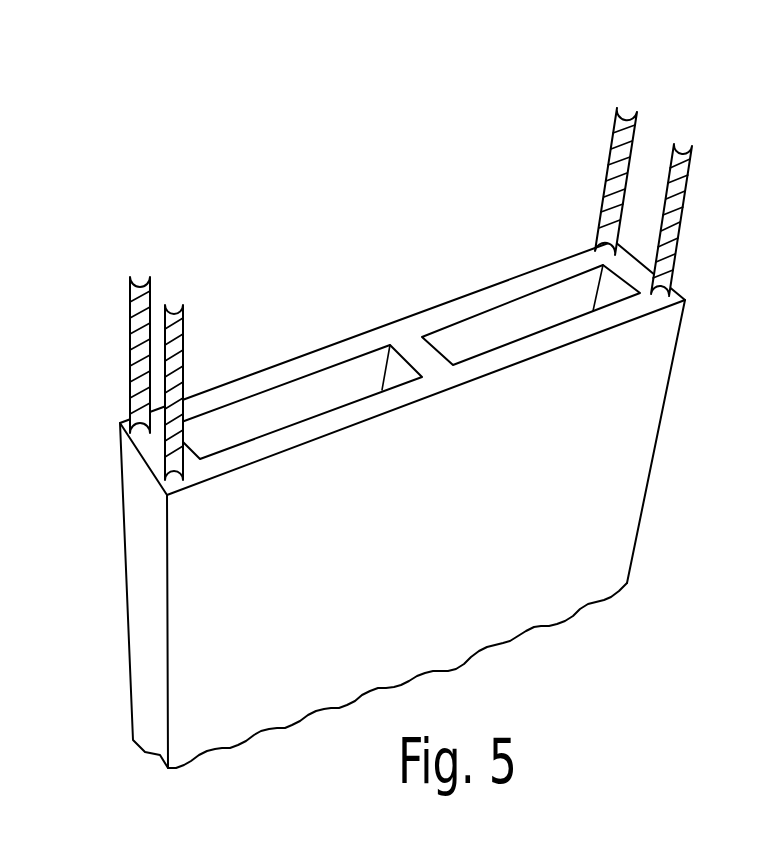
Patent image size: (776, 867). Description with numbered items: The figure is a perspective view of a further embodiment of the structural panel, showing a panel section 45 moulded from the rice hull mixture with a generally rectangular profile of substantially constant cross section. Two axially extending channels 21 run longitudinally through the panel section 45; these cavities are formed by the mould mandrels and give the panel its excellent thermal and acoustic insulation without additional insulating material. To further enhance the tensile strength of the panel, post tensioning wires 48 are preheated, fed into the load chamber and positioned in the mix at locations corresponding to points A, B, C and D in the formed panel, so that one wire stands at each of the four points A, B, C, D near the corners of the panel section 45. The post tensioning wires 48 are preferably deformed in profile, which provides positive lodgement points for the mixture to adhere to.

The panel section 45 is at (159, 193).
The post tensioning wires 48 is at (130, 295).
The axially extending channels 21 is at (332, 392).
The point A is at (128, 412).
The point B is at (162, 460).
The point C is at (620, 238).
The point D is at (673, 282).